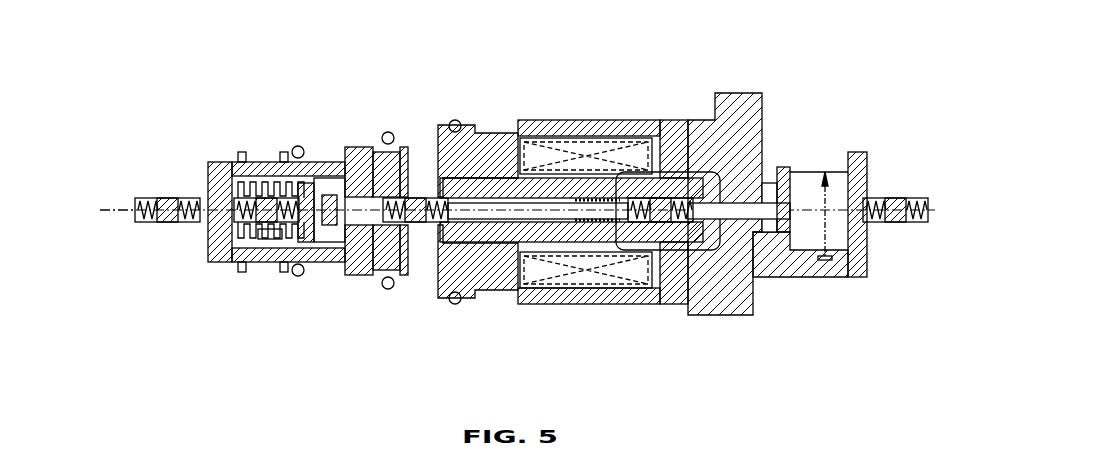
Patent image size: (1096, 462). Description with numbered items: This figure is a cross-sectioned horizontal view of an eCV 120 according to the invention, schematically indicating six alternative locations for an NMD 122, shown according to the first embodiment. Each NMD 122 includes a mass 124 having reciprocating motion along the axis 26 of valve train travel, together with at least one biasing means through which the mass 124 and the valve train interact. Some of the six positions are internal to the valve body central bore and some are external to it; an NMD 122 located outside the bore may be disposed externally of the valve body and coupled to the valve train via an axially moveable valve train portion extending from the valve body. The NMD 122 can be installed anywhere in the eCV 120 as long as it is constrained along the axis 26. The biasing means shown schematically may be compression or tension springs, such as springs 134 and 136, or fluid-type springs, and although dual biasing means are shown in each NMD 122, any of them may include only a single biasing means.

The eCV 120 is at (675, 68).
The NMD 122 is at (170, 200).
The mass 124 is at (163, 178).
The spring 134 is at (148, 226).
The spring 136 is at (190, 226).
The axis 26 is at (130, 208).